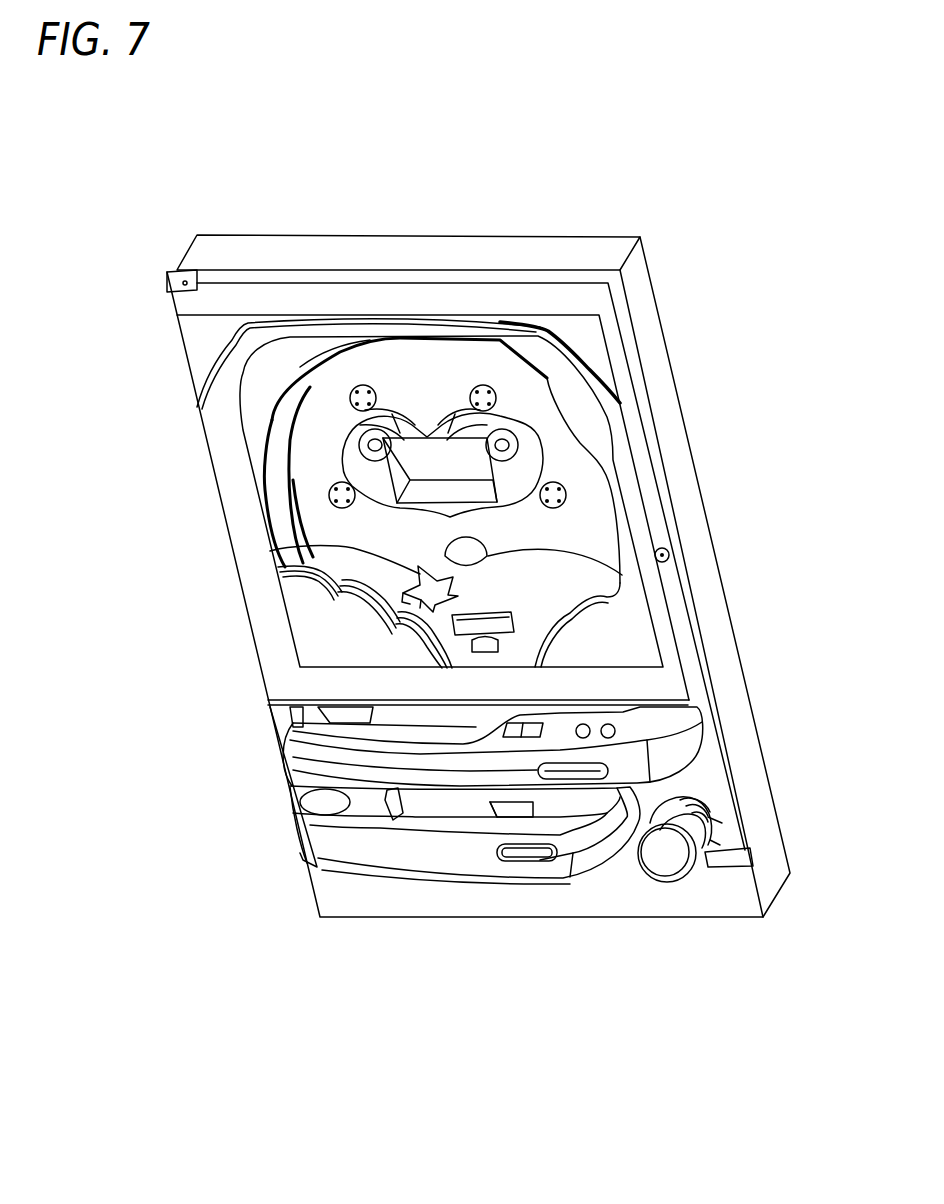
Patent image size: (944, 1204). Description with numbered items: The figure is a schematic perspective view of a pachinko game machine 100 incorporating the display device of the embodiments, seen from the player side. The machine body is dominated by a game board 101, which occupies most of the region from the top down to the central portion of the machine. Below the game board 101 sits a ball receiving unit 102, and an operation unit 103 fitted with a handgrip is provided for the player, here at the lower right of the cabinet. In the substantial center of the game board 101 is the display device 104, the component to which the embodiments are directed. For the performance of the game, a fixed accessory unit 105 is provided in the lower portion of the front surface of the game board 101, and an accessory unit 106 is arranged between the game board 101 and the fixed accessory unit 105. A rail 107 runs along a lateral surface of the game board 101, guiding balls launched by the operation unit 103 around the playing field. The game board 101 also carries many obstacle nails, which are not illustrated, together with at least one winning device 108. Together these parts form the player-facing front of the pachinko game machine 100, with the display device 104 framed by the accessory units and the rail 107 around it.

The pachinko game machine 100 is at (732, 949).
The game board 101 is at (583, 465).
The ball receiving unit 102 is at (337, 817).
The operation unit 103 is at (707, 833).
The display device 104 is at (427, 463).
The fixed accessory unit 105 is at (322, 630).
The accessory unit 106 is at (350, 547).
The rail 107 is at (286, 405).
The winning device 108 is at (643, 583).